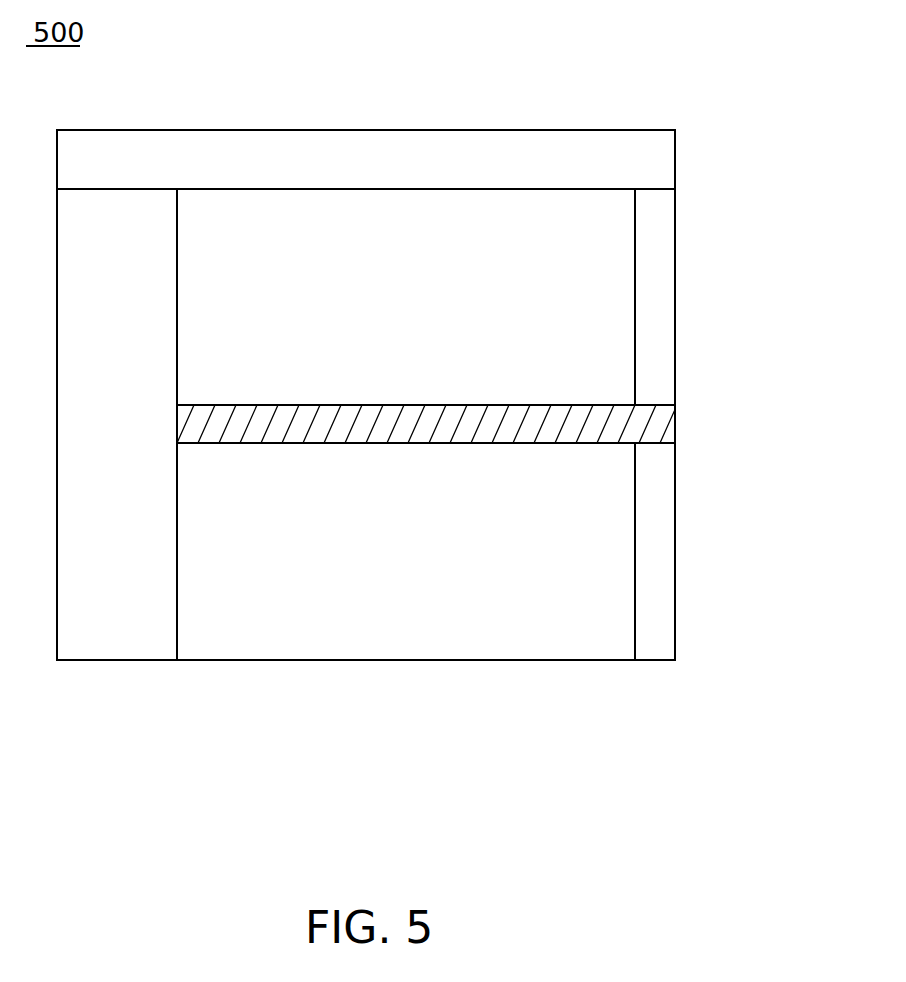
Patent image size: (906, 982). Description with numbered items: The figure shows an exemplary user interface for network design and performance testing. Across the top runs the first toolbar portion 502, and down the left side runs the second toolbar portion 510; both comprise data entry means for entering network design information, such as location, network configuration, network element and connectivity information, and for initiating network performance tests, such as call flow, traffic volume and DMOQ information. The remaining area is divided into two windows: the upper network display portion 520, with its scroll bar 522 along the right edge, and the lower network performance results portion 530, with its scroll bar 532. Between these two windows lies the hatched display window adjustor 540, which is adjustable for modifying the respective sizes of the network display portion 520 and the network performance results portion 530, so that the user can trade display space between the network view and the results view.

The first toolbar portion 502 is at (652, 160).
The second toolbar portion 510 is at (128, 640).
The network display portion 520 is at (608, 285).
The scroll bar 522 is at (655, 363).
The network performance results portion 530 is at (607, 557).
The scroll bar 532 is at (653, 633).
The display window adjustor 540 is at (652, 430).